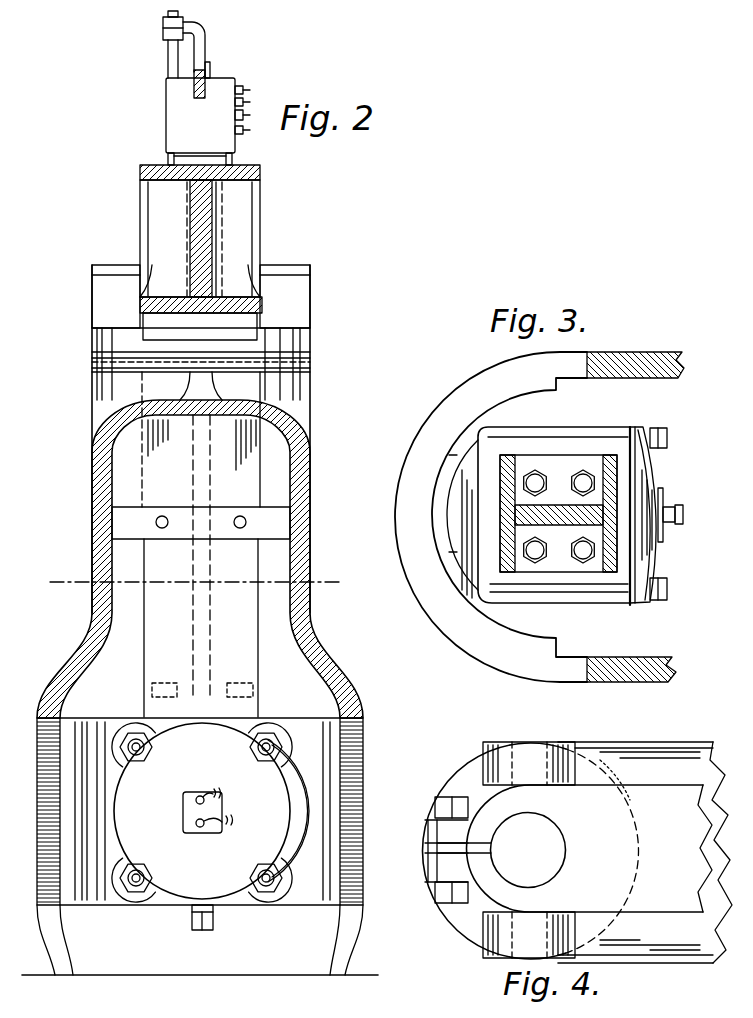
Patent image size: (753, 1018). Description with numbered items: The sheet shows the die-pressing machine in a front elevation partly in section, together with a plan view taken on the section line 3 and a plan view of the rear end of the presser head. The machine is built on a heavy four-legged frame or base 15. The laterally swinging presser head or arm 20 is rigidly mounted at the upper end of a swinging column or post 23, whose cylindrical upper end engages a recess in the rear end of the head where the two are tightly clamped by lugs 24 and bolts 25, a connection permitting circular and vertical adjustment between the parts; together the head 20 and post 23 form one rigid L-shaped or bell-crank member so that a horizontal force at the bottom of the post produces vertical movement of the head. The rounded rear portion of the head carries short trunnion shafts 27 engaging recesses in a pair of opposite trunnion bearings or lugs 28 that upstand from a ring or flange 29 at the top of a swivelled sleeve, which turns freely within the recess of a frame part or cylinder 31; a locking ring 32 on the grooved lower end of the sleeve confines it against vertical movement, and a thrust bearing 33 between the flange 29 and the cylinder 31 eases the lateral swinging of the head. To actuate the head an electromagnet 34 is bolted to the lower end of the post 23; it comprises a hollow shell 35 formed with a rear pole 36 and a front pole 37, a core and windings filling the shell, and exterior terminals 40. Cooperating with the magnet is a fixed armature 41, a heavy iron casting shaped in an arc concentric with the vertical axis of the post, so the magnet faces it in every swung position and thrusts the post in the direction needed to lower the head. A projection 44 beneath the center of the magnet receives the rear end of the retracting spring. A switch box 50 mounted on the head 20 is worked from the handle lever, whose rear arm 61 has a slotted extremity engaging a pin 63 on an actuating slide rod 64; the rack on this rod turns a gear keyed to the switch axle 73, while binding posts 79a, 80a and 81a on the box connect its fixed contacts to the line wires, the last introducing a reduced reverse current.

In FIG. 2, the section line 3— 3 is at (195, 582).
In FIG. 2, the frame or base 15 is at (92, 604).
In FIG. 3, the frame or base 15 is at (684, 366).
In FIG. 4, the frame or base 15 is at (645, 852).
In FIG. 2, the presser head or arm 20 is at (213, 212).
In FIG. 4, the presser head or arm 20 is at (590, 848).
In FIG. 2, the swinging column or post 23 is at (201, 566).
In FIG. 3, the swinging column or post 23 is at (617, 474).
In FIG. 4, the swinging column or post 23 is at (501, 850).
In FIG. 4, the lugs 24 is at (450, 874).
In FIG. 4, the bolts 25 is at (445, 797).
In FIG. 2, the trunnion shafts 27 is at (100, 296).
In FIG. 2, the trunnion bearings or lugs 28 is at (118, 265).
In FIG. 4, the trunnion bearings or lugs 28 is at (500, 752).
In FIG. 2, the ring or flange 29 is at (312, 330).
In FIG. 4, the ring or flange 29 is at (468, 758).
In FIG. 2, the frame part or cylinder 31 is at (306, 393).
In FIG. 2, the locking ring 32 is at (238, 530).
In FIG. 2, the thrust bearing 33 is at (312, 362).
In FIG. 2, the electromagnet 34 is at (202, 811).
In FIG. 3, the electromagnet 34 is at (554, 504).
In FIG. 2, the hollow shell 35 is at (275, 811).
In FIG. 3, the hollow shell 35 is at (539, 512).
In FIG. 3, the rear pole 36 is at (460, 519).
In FIG. 2, the front pole 37 is at (200, 834).
In FIG. 3, the front pole 37 is at (664, 498).
In FIG. 2, the exterior terminals 40 is at (185, 806).
In FIG. 2, the armature 41 is at (278, 752).
In FIG. 3, the armature 41 is at (458, 381).
In FIG. 2, the projection 44 is at (213, 921).
In FIG. 2, the switch box 50 is at (200, 121).
In FIG. 2, the rear arm 61 is at (194, 88).
In FIG. 2, the pin 63 is at (163, 26).
In FIG. 2, the actuating slide rod or bar 64 is at (168, 56).
In FIG. 2, the axle 73 is at (253, 115).
In FIG. 2, the binding post 79a is at (247, 131).
In FIG. 2, the binding post 80a is at (248, 103).
In FIG. 2, the binding post 81a is at (247, 92).